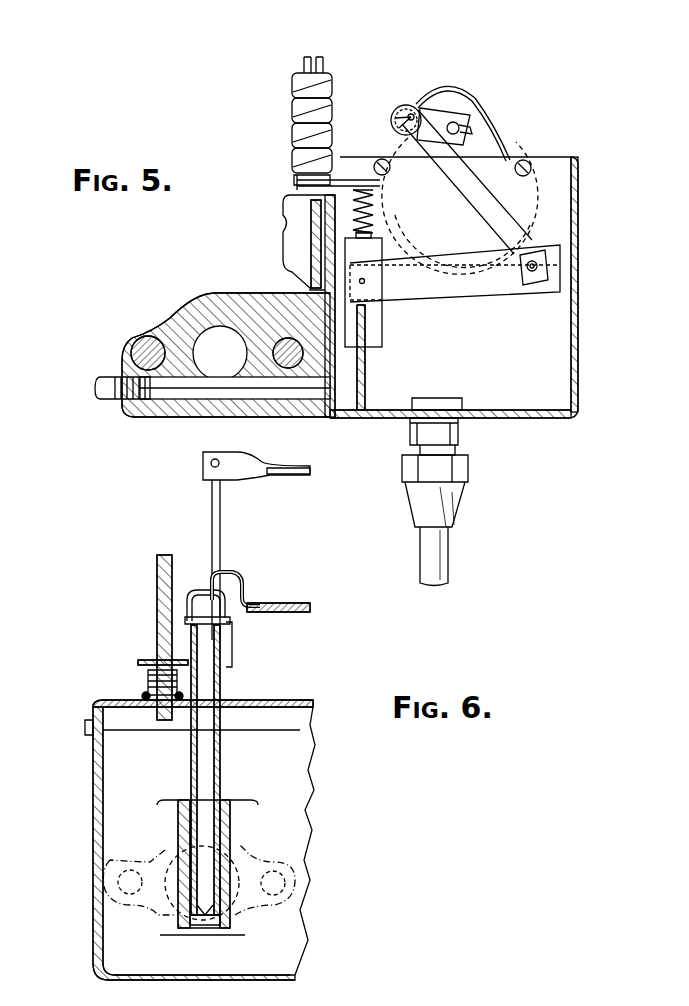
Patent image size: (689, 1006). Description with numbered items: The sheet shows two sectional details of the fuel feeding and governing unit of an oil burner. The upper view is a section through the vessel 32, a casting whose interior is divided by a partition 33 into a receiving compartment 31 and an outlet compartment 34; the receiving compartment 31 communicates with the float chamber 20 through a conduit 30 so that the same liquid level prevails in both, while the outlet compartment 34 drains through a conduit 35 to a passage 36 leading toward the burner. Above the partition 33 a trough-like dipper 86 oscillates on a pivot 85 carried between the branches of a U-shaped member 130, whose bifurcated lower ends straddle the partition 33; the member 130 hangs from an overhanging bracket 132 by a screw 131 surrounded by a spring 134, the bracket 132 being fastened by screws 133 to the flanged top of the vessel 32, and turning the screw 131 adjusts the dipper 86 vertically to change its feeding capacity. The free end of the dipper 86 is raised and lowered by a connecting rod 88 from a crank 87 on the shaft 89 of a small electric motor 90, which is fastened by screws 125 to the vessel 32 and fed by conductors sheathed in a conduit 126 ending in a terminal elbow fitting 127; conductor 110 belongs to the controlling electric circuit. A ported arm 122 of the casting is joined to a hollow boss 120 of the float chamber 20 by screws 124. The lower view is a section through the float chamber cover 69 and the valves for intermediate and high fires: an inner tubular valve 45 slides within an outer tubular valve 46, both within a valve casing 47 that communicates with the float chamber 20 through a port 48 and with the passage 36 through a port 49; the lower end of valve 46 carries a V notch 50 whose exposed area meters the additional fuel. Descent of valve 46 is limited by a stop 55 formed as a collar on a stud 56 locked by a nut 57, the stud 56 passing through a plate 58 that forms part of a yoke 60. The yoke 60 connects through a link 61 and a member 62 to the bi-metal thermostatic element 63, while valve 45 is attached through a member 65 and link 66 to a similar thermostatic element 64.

In FIG. 6, the float chamber 20 is at (95, 816).
In FIG. 5, the conduit 30 is at (428, 560).
In FIG. 5, the receiving compartment 31 is at (467, 352).
In FIG. 5, the vessel 32 is at (575, 161).
In FIG. 5, the partition 33 is at (368, 356).
In FIG. 5, the outlet compartment 34 is at (345, 406).
In FIG. 5, the conduit 35 is at (292, 401).
In FIG. 5, the passage 36 is at (220, 353).
In FIG. 6, the passage 36 is at (238, 851).
In FIG. 6, the inner tubular valve 45 is at (222, 686).
In FIG. 6, the tubular valve 46 is at (235, 701).
In FIG. 6, the valve casing 47 is at (180, 911).
In FIG. 6, the port 48 is at (198, 926).
In FIG. 6, the port 49 is at (168, 856).
In FIG. 6, the V notch 50 is at (207, 916).
In FIG. 6, the stop 55 is at (148, 674).
In FIG. 6, the stud 56 is at (157, 592).
In FIG. 6, the nut 57 is at (143, 694).
In FIG. 6, the plate 58 is at (142, 658).
In FIG. 6, the yoke 60 is at (233, 646).
In FIG. 6, the link 61 is at (222, 516).
In FIG. 6, the member 62 is at (203, 463).
In FIG. 6, the thermostatic element 63 is at (300, 472).
In FIG. 6, the thermostatic element 64 is at (295, 603).
In FIG. 6, the member 65 is at (235, 576).
In FIG. 6, the link 66 is at (200, 586).
In FIG. 6, the cover 69 is at (305, 701).
In FIG. 5, the pivot 85 is at (368, 279).
In FIG. 5, the dipper 86 is at (495, 282).
In FIG. 5, the crank 87 is at (420, 106).
In FIG. 5, the connecting rod 88 is at (462, 184).
In FIG. 5, the shaft 89 is at (456, 124).
In FIG. 5, the electric motor 90 is at (492, 136).
In FIG. 5, the conductor 110 is at (318, 53).
In FIG. 6, the hollow boss 120 is at (215, 866).
In FIG. 5, the ported arm 122 is at (252, 300).
In FIG. 5, the screws 124 is at (142, 341).
In FIG. 6, the screws 124 is at (118, 881).
In FIG. 5, the screws 125 is at (380, 158).
In FIG. 5, the conduit 126 is at (318, 104).
In FIG. 5, the terminal elbow fitting 127 is at (290, 246).
In FIG. 5, the U-shaped member 130 is at (375, 250).
In FIG. 5, the screw 131 is at (372, 198).
In FIG. 5, the overhanging bracket 132 is at (298, 156).
In FIG. 5, the screws 133 is at (292, 174).
In FIG. 5, the spring 134 is at (372, 234).